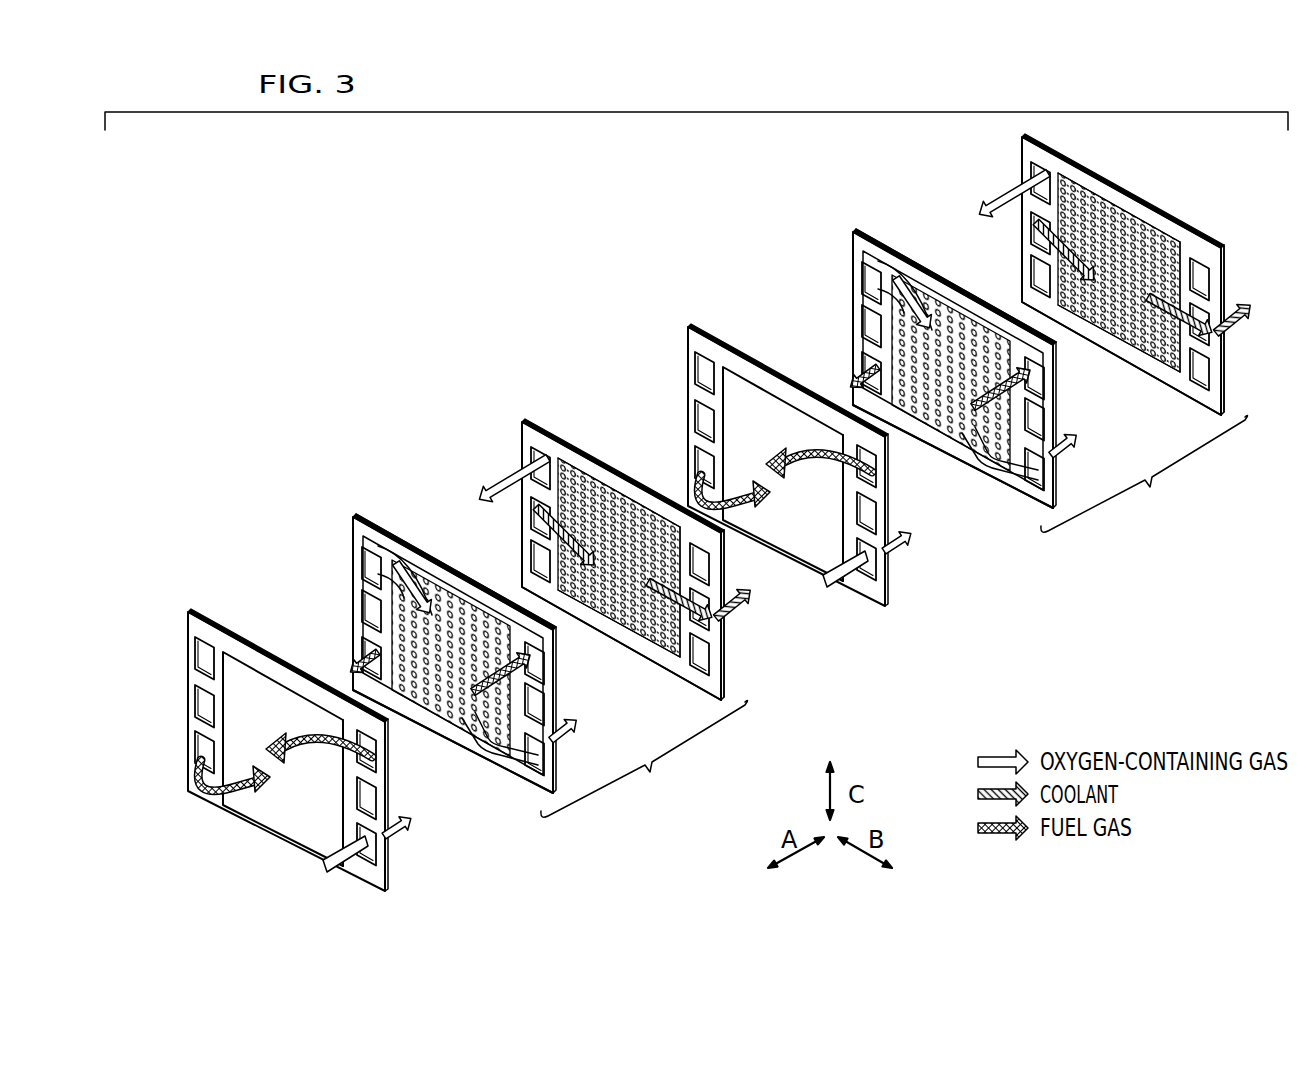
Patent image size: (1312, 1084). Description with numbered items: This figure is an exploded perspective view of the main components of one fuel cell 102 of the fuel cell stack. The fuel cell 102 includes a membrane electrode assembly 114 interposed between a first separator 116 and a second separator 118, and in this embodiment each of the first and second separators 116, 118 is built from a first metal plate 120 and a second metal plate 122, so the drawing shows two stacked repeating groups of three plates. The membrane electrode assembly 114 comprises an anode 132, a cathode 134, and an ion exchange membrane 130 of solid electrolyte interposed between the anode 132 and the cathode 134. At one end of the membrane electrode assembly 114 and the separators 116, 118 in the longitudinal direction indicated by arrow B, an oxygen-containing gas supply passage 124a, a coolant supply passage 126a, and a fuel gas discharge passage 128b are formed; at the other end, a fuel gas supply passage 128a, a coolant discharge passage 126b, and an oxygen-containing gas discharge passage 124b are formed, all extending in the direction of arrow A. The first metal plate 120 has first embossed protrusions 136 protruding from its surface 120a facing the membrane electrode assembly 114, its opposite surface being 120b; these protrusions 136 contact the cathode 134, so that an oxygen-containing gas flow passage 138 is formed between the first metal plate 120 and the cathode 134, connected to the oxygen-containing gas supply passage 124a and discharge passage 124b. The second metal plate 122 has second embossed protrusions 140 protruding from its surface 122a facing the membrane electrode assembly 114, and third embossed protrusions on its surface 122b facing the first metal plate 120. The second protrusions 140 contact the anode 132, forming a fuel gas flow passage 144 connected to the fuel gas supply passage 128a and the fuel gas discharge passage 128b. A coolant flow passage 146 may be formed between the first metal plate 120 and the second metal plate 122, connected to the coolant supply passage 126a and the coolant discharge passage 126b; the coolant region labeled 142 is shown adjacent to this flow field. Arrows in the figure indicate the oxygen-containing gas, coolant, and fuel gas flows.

The fuel cell 102 is at (412, 315).
The membrane electrode assembly 114 is at (197, 609).
The first separator 116 is at (1144, 474).
The second separator 118 is at (644, 759).
The first metal plate 120 is at (369, 518).
The surface of first metal plate 120a is at (407, 558).
The surface of first metal plate 120b is at (479, 745).
The second metal plate 122 is at (535, 422).
The surface of second metal plate 122a is at (634, 648).
The surface of second metal plate 122b is at (688, 682).
The oxygen-containing gas supply passage 124a is at (534, 457).
The oxygen-containing gas discharge passage 124b is at (378, 856).
The coolant supply passage 126a is at (533, 515).
The coolant discharge passage 126b is at (377, 808).
The fuel gas supply passage 128a is at (374, 762).
The fuel gas discharge passage 128b is at (533, 553).
The ion exchange membrane 130 is at (358, 871).
The anode 132 is at (311, 720).
The cathode 134 is at (248, 684).
The first embossed protrusions 136 is at (428, 703).
The oxygen-containing gas flow passage 138 is at (476, 606).
The second embossed protrusions 140 is at (621, 487).
The coolant flow field 142 is at (630, 633).
The fuel gas flow passage 144 is at (643, 492).
The coolant flow passage 146 is at (585, 470).